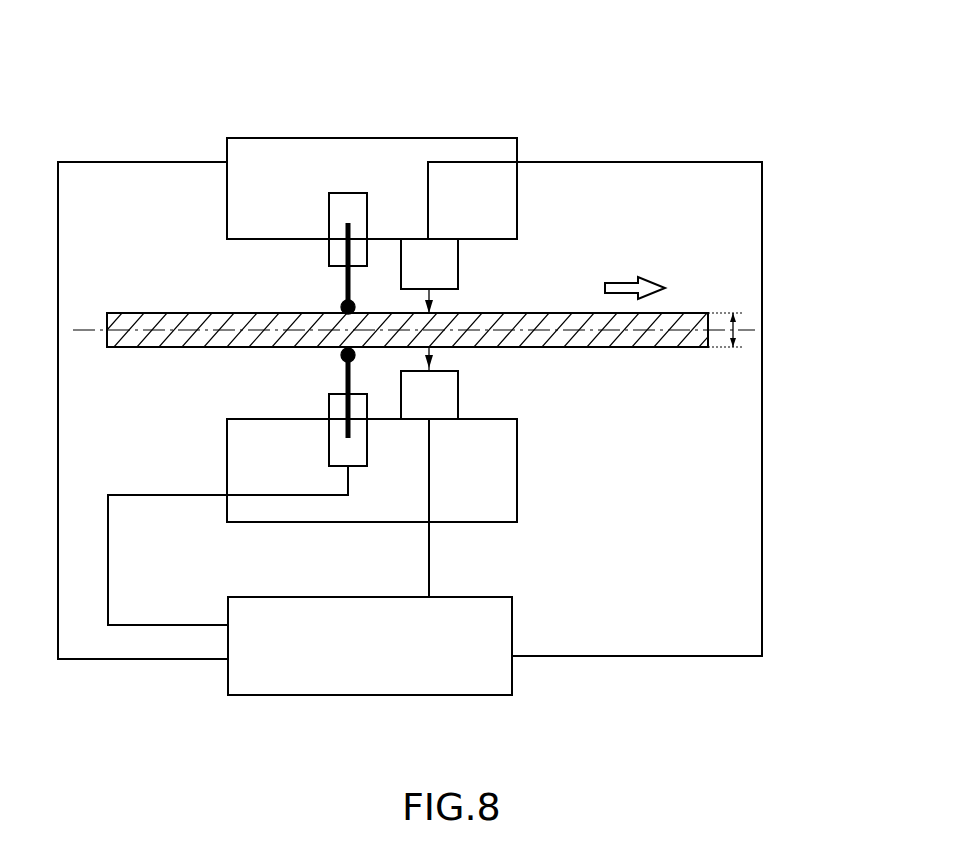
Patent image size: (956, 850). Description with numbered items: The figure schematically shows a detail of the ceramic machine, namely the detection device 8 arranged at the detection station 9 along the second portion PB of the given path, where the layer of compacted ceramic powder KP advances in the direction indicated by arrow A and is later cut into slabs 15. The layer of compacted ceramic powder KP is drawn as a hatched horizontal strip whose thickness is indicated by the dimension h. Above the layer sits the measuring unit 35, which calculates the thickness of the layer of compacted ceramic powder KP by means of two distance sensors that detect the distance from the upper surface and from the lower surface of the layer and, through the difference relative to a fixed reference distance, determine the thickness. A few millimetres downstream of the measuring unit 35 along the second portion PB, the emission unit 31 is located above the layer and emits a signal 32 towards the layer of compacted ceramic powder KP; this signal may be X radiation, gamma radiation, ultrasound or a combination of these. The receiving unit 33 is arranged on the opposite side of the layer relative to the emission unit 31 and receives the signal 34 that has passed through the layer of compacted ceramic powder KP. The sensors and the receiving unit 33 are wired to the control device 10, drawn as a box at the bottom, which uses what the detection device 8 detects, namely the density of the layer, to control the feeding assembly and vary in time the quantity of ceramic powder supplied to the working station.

The detection device 8 is at (155, 150).
The detection station 9 is at (418, 97).
The measuring unit 35 is at (367, 180).
The emission unit 31 is at (458, 252).
The signal 32 is at (432, 292).
The receiving unit 33 is at (458, 395).
The signal 34 is at (432, 350).
The control device 10 is at (386, 654).
The layer of compacted ceramic powder KP is at (131, 312).
The slabs 15 is at (563, 300).
The conveying direction A is at (635, 274).
The second portion of the given path PB is at (742, 330).
The plate thickness h is at (745, 340).